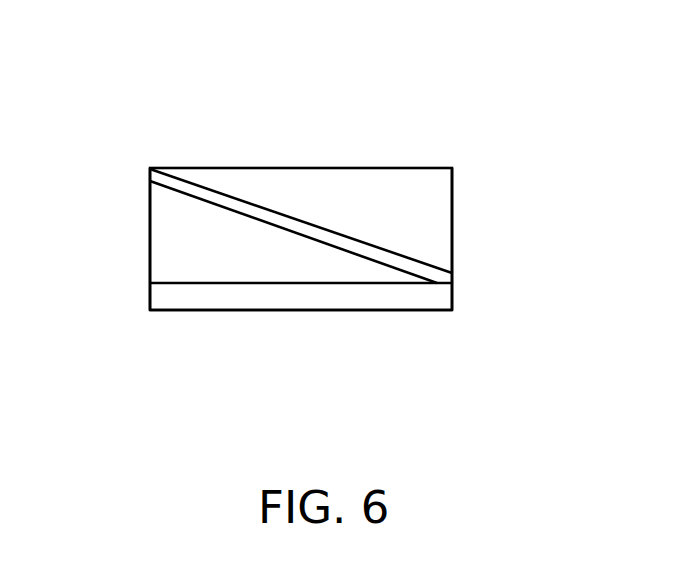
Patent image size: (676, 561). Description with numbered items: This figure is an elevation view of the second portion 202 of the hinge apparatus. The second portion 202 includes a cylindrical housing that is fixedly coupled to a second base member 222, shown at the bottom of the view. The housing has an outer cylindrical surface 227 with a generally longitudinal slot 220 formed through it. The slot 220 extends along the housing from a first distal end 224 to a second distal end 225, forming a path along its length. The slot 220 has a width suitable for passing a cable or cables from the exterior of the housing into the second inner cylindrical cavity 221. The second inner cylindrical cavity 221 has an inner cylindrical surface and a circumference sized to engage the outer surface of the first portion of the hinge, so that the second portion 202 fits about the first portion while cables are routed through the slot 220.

The second portion 202 is at (489, 72).
The slot 220 is at (316, 218).
The second inner cylindrical cavity 221 is at (470, 223).
The second base member 222 is at (160, 310).
The first distal end 224 is at (150, 168).
The second distal end 225 is at (452, 168).
The outer cylindrical surface 227 is at (301, 253).